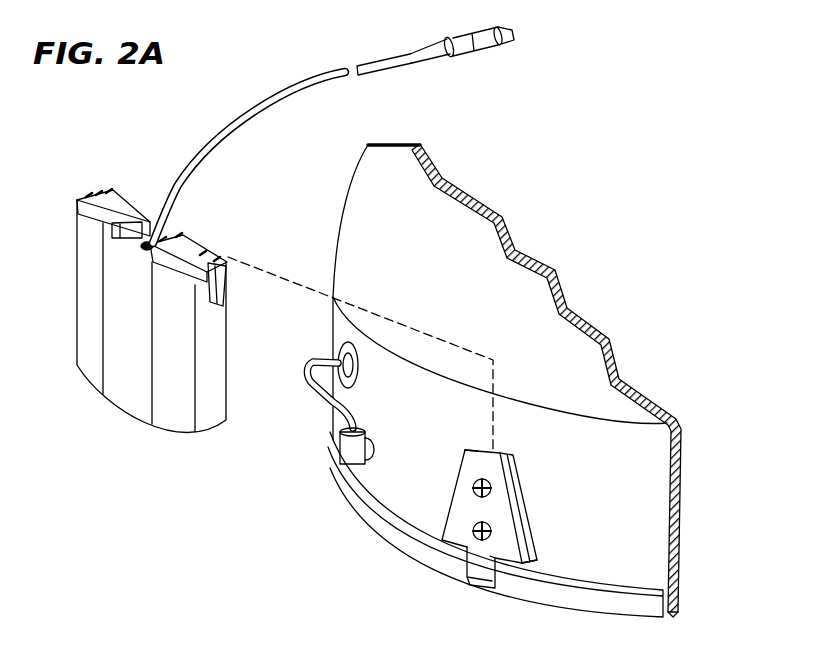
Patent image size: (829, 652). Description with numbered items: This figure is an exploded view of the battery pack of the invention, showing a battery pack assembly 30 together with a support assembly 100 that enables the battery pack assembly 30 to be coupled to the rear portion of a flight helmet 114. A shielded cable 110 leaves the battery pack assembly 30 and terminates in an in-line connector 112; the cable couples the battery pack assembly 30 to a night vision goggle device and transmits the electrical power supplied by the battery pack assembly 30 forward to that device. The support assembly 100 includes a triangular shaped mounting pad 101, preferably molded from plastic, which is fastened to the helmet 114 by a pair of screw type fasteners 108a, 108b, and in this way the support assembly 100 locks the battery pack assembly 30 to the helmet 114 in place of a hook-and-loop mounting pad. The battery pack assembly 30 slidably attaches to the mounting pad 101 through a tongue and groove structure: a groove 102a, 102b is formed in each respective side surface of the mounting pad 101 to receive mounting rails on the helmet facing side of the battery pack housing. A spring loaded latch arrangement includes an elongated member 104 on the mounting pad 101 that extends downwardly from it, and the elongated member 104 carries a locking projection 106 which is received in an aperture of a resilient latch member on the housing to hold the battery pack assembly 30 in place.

The battery pack assembly 30 is at (98, 409).
The support assembly 100 is at (392, 572).
The mounting pad 101 is at (463, 503).
The groove 102a is at (513, 477).
The groove 102b is at (477, 448).
The elongated member 104 is at (528, 548).
The locking projection 106 is at (479, 585).
The screw type fastener 108a is at (484, 478).
The screw type fastener 108b is at (473, 535).
The shielded cable 110 is at (297, 90).
The in-line connector 112 is at (483, 33).
The helmet 114 is at (647, 523).